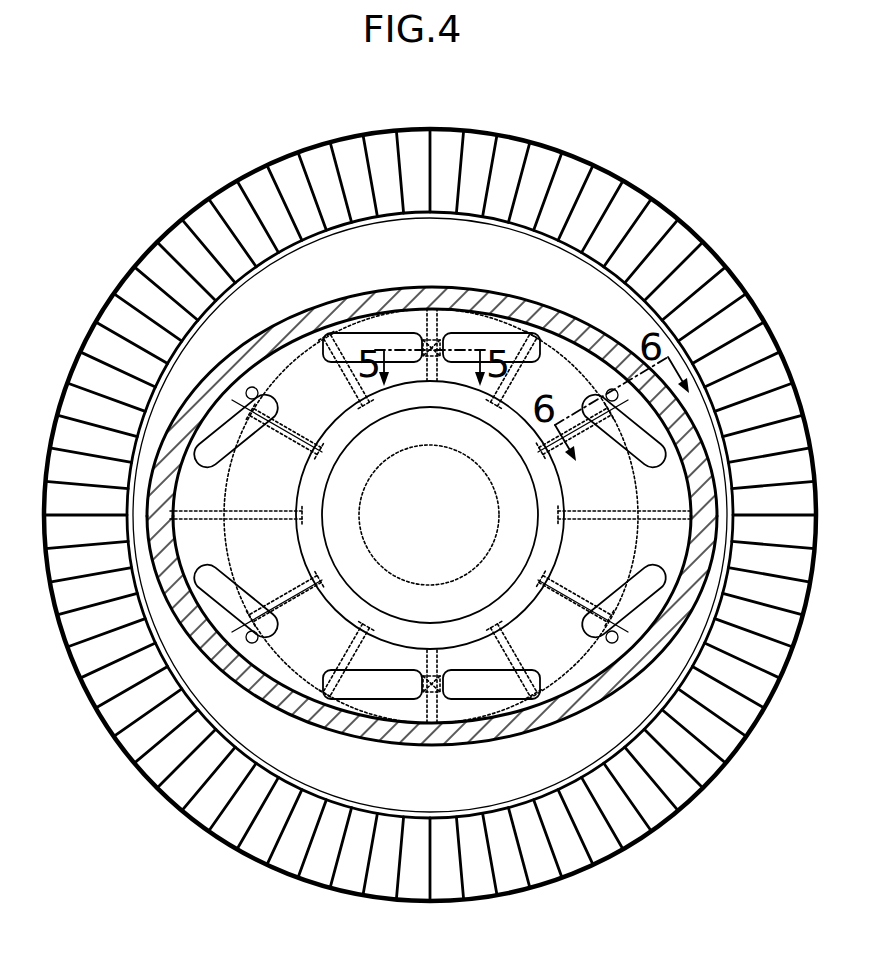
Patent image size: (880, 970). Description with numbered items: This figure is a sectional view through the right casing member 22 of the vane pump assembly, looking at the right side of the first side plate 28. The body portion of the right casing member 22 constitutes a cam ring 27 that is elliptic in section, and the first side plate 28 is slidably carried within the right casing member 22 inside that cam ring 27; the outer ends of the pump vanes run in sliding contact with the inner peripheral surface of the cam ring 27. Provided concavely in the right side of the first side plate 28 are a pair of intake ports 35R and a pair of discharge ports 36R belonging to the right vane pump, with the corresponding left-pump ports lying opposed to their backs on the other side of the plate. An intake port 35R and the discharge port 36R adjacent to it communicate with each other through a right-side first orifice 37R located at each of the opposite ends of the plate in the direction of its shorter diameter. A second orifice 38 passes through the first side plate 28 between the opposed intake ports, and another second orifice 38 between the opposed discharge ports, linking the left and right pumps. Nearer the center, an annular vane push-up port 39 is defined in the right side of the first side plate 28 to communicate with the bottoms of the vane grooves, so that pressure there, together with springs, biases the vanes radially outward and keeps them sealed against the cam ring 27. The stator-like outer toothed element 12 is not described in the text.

The stator 12 is at (540, 166).
The right casing member 22 is at (278, 289).
The cam ring 27 is at (416, 297).
The first side plate 28 is at (390, 731).
The right-side first orifice 37R is at (466, 300).
The second orifice 38 is at (251, 386).
The discharge port 36R is at (285, 398).
The intake port 35R is at (613, 413).
The annular vane push-up port 39 is at (322, 540).